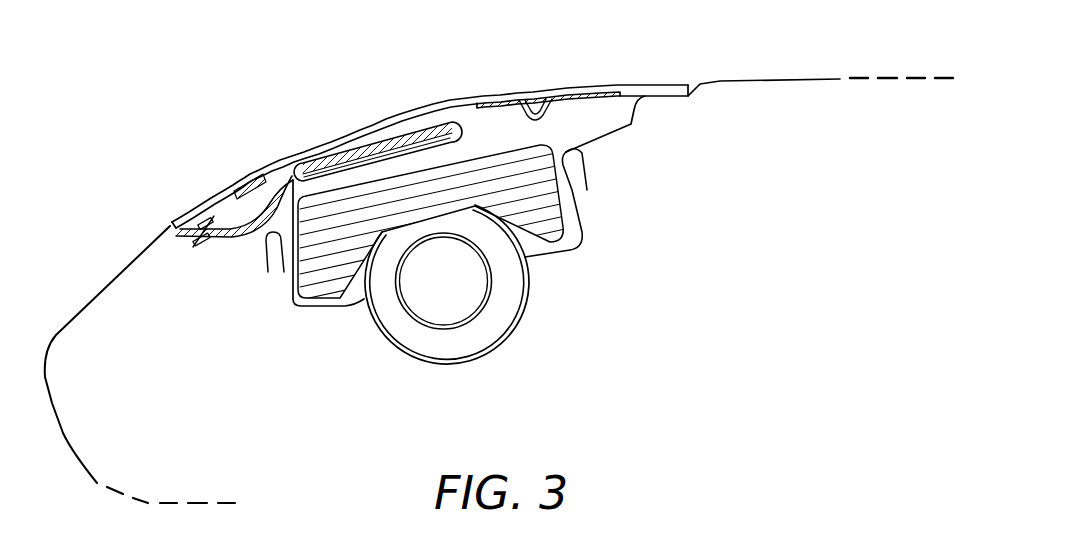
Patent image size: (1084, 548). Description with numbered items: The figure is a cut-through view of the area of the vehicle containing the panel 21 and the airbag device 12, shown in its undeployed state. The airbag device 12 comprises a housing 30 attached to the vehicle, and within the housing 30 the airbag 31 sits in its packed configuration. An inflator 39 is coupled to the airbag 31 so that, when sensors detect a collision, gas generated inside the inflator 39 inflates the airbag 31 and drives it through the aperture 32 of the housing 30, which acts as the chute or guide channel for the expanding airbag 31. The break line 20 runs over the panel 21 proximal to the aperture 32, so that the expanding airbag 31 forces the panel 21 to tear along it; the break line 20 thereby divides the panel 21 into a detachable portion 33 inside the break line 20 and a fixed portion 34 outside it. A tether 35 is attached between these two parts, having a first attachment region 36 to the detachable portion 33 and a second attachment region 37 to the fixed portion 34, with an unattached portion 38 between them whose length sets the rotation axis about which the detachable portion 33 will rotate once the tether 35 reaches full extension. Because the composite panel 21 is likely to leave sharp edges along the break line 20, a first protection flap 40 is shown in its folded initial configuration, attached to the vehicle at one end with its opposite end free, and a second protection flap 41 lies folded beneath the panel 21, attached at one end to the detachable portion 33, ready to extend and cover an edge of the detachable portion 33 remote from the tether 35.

The airbag device 12 is at (595, 239).
The break line 20 is at (527, 95).
The panel 21 is at (200, 213).
The housing 30 is at (525, 315).
The airbag 31 is at (548, 198).
The aperture 32 is at (552, 147).
The detachable portion 33 is at (347, 134).
The fixed portion 34 is at (580, 86).
The tether 35 is at (478, 103).
The first attachment region 36 is at (484, 131).
The second attachment region 37 is at (528, 120).
The unattached portion 38 is at (520, 119).
The inflator 39 is at (470, 360).
The first protection flap 40 is at (306, 163).
The second protection flap 41 is at (236, 190).